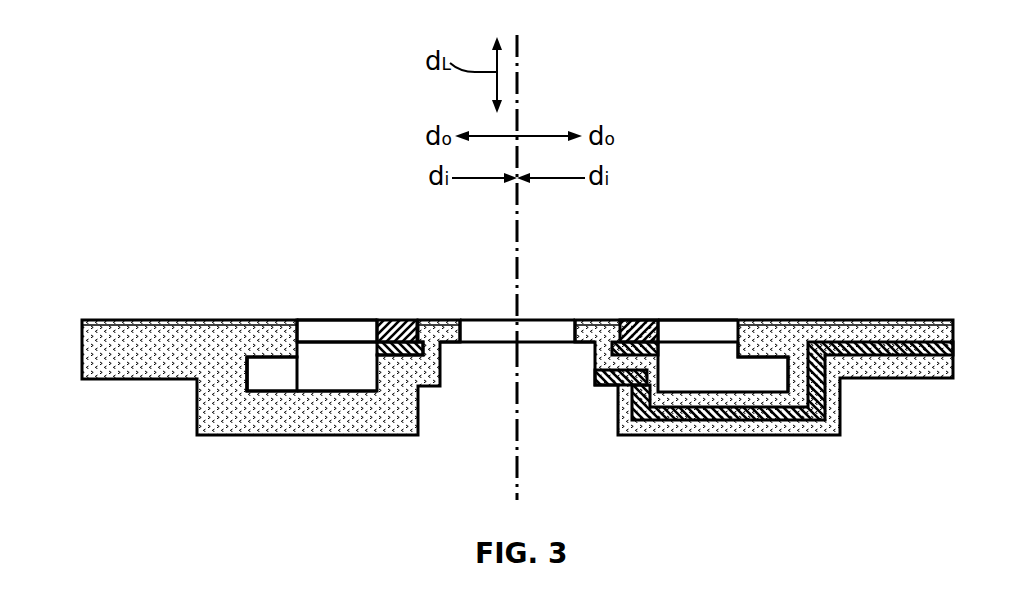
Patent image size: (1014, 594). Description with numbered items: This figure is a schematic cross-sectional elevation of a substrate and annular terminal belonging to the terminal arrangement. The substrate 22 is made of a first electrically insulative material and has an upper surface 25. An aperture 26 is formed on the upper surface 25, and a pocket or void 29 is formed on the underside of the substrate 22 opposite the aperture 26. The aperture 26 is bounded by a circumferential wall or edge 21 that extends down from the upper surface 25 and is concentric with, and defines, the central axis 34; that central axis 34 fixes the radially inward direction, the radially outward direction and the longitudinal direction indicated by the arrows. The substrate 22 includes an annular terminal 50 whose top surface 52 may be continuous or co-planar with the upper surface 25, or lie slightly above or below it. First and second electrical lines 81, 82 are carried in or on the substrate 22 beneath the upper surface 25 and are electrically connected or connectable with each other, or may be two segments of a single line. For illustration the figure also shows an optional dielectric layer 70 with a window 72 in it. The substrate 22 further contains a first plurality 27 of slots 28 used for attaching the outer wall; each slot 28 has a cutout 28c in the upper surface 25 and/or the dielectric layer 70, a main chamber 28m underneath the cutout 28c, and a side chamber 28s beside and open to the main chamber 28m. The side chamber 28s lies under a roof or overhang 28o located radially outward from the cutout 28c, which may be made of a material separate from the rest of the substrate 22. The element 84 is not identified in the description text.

The circumferential wall 21 is at (470, 320).
The substrate 22 is at (155, 335).
The upper surface 25 is at (232, 325).
The aperture 26 is at (543, 296).
The first plurality of slots 27 is at (227, 122).
The slot 28 is at (309, 240).
The cutout 28c is at (318, 320).
The roof or overhang 28o is at (273, 358).
The side chamber 28s is at (275, 376).
The main chamber 28m is at (332, 365).
The pocket or void 29 is at (479, 436).
The central axis 34 is at (518, 90).
The annular terminal 50 is at (343, 320).
The top surface 52 is at (370, 211).
The dielectric layer 70 is at (852, 320).
The window 72 is at (617, 206).
The first electrical line 81 is at (397, 356).
The second electrical line 82 is at (802, 413).
The seal block 84 is at (603, 387).